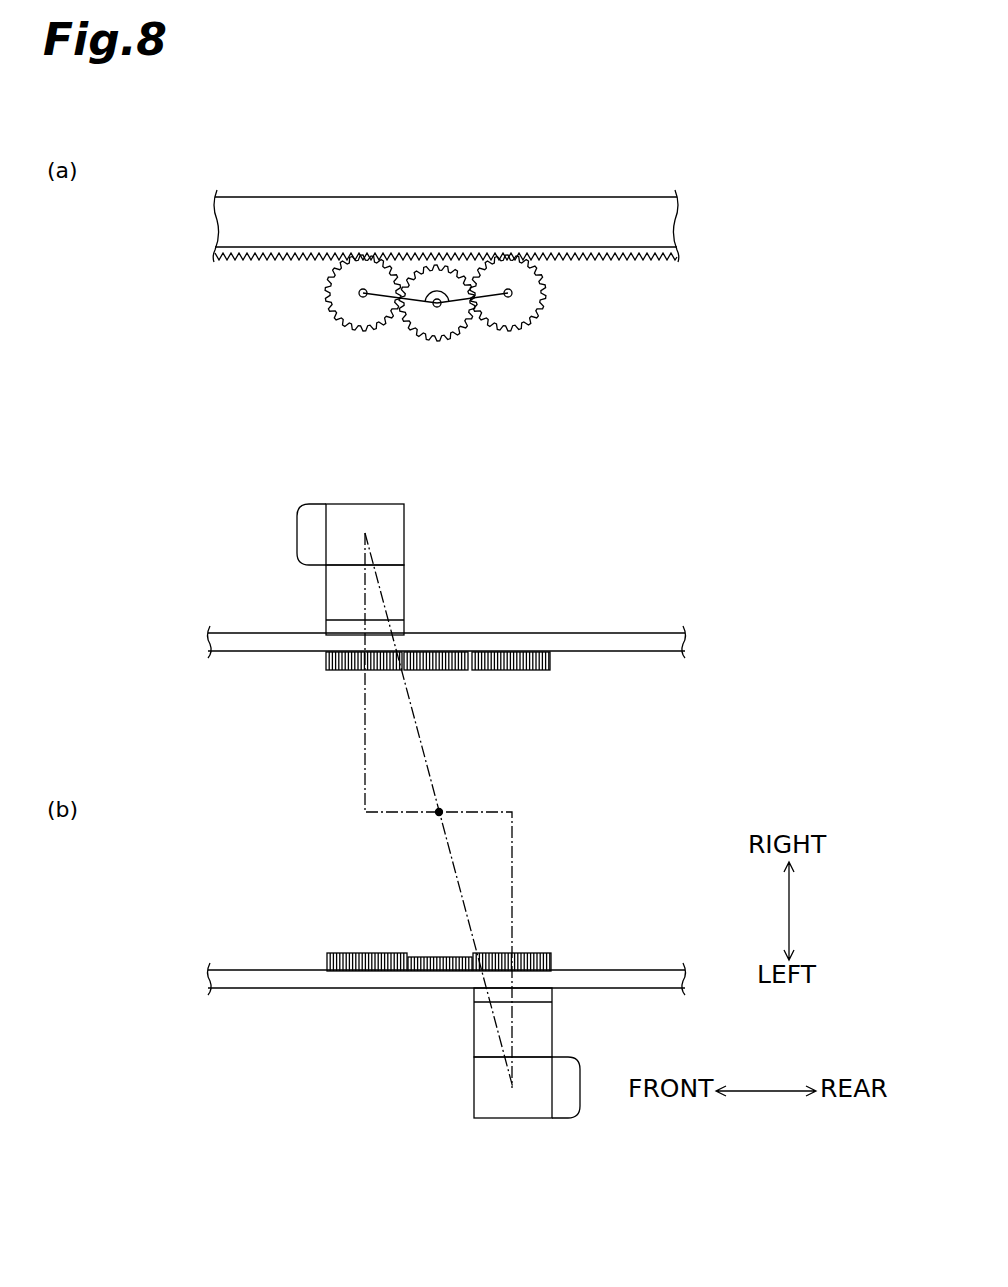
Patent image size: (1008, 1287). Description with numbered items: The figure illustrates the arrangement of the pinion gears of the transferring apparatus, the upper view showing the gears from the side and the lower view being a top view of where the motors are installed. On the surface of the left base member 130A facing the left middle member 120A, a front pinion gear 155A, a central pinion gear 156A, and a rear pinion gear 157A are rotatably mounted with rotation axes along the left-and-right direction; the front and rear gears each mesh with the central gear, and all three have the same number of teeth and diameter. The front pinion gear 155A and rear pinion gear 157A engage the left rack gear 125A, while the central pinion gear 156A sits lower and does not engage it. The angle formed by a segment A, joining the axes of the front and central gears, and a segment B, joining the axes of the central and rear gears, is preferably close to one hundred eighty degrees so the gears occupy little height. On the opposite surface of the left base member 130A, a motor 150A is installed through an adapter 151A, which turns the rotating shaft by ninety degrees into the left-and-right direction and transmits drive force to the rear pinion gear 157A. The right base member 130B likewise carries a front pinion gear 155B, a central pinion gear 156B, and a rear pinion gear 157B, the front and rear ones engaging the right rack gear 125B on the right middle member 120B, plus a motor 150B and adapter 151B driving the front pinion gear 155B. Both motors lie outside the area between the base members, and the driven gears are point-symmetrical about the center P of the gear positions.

In FIG. 8A, the left middle member 120A is at (472, 199).
In FIG. 8A, the right middle member 120B is at (625, 212).
In FIG. 8A, the left rack gear 125A is at (507, 281).
In FIG. 8A, the right rack gear 125B is at (645, 252).
In FIG. 8A, the front pinion gear 155A is at (289, 308).
In FIG. 8B, the front pinion gear 155A is at (358, 953).
In FIG. 8A, the front pinion gear 155B is at (345, 312).
In FIG. 8B, the front pinion gear 155B is at (343, 672).
In FIG. 8A, the central pinion gear 156A is at (474, 332).
In FIG. 8B, the central pinion gear 156A is at (438, 957).
In FIG. 8A, the central pinion gear 156B is at (443, 332).
In FIG. 8B, the central pinion gear 156B is at (447, 672).
In FIG. 8A, the rear pinion gear 157A is at (580, 312).
In FIG. 8B, the rear pinion gear 157A is at (527, 953).
In FIG. 8A, the rear pinion gear 157B is at (523, 317).
In FIG. 8B, the rear pinion gear 157B is at (518, 672).
In FIG. 8B, the left base member 130A is at (642, 980).
In FIG. 8B, the right base member 130B is at (640, 640).
In FIG. 8B, the motor 150A is at (488, 1093).
In FIG. 8B, the motor 150B is at (393, 537).
In FIG. 8B, the adapter 151A is at (488, 1030).
In FIG. 8B, the adapter 151B is at (340, 593).
In FIG. 8B, the center P is at (439, 812).
In FIG. 8A, the segment A is at (385, 295).
In FIG. 8A, the segment B is at (490, 295).